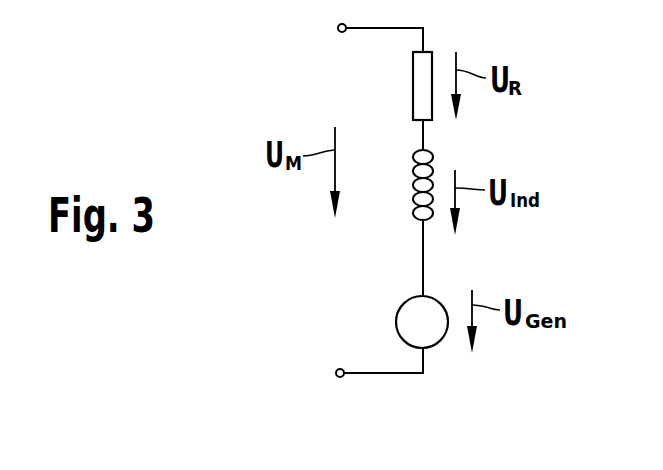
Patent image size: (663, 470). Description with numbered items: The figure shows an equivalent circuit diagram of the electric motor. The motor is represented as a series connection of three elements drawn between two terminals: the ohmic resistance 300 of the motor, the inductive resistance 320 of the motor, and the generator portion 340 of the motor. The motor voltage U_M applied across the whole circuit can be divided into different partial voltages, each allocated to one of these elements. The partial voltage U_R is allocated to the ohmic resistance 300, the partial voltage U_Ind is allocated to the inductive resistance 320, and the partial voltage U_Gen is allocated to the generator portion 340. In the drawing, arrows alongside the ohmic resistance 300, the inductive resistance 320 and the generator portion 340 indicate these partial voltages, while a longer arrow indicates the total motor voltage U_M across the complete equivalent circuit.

The ohmic resistance 300 is at (432, 60).
The inductive resistance 320 is at (433, 165).
The generator portion 340 is at (435, 298).